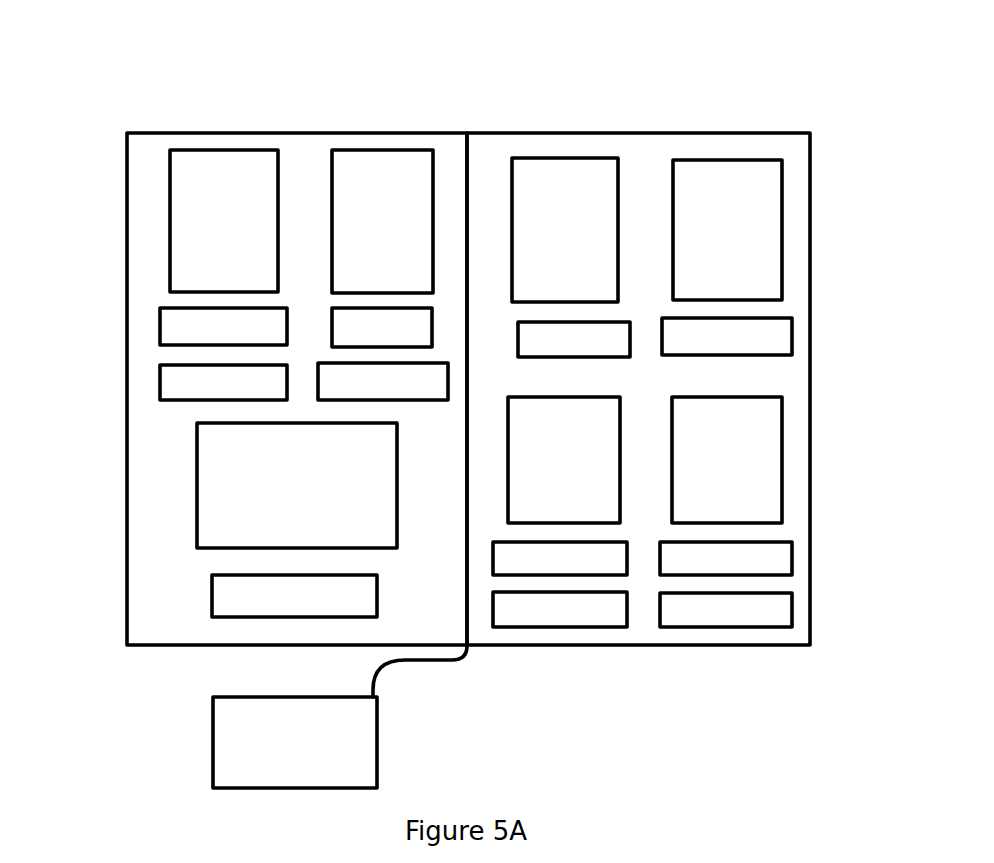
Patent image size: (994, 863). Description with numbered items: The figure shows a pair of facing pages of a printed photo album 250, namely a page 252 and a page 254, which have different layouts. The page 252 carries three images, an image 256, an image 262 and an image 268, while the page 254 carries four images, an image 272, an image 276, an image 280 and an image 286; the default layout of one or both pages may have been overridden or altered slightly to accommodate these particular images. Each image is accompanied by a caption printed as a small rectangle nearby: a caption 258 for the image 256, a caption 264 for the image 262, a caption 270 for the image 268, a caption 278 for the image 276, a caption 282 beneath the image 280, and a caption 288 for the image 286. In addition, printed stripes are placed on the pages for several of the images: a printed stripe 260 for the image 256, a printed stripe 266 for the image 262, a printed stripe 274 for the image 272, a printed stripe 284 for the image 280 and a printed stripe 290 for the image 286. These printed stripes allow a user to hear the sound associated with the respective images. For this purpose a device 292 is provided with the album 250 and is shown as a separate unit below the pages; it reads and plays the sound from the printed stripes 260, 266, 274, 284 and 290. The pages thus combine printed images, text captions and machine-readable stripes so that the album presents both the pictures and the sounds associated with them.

The printed photo album 250 is at (446, 52).
The page 252 is at (241, 389).
The page 254 is at (695, 383).
The image 256 is at (173, 187).
The caption 258 is at (151, 311).
The printed stripe 260 is at (151, 364).
The image 262 is at (320, 178).
The caption 264 is at (313, 223).
The printed stripe 266 is at (431, 233).
The image 268 is at (206, 483).
The caption 270 is at (196, 570).
The image 272 is at (557, 201).
The printed stripe 274 is at (631, 220).
The image 276 is at (773, 192).
The caption 278 is at (793, 317).
The image 280 is at (716, 436).
The caption 282 is at (626, 618).
The printed stripe 284 is at (560, 643).
The image 286 is at (798, 460).
The caption 288 is at (792, 566).
The printed stripe 290 is at (792, 617).
The device 292 is at (293, 741).